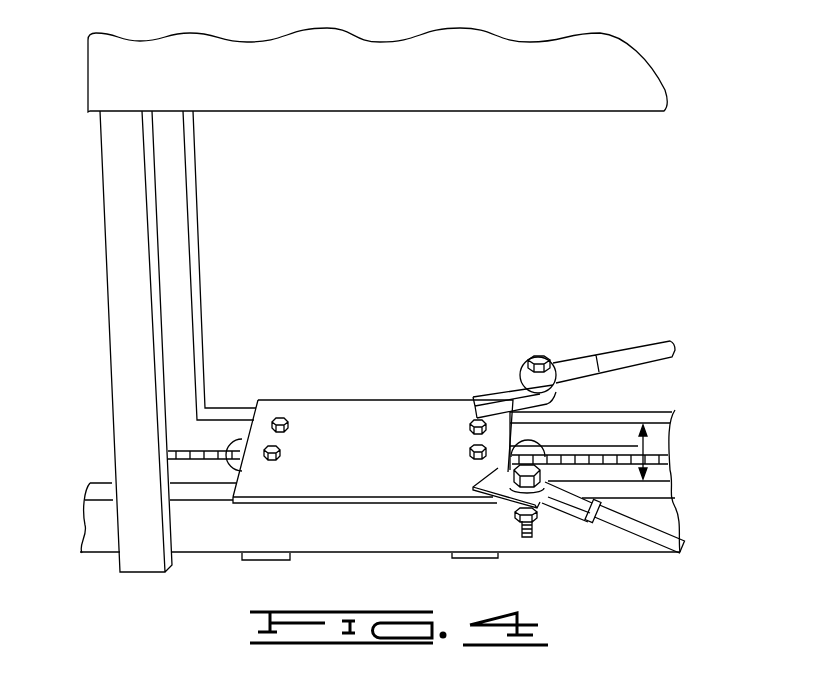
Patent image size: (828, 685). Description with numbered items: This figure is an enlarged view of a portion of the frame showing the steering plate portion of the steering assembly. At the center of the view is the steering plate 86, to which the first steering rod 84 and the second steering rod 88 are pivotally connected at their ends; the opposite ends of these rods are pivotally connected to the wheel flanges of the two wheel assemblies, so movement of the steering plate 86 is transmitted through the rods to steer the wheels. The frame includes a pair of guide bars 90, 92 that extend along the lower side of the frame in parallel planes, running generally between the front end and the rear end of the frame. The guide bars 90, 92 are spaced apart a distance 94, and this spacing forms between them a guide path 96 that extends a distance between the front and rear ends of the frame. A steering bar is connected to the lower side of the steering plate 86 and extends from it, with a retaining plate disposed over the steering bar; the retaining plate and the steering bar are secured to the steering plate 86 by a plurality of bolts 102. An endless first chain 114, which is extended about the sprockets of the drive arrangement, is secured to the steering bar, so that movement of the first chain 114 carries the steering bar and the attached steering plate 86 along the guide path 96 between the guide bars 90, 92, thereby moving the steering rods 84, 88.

The first steering rod 84 is at (658, 533).
The steering plate 86 is at (354, 417).
The second steering rod 88 is at (622, 358).
The guide bar 90 is at (657, 420).
The guide bar 92 is at (597, 543).
The distance 94 is at (642, 447).
The guide path 96 is at (577, 436).
The bolts 102 is at (280, 415).
The first chain 114 is at (187, 454).